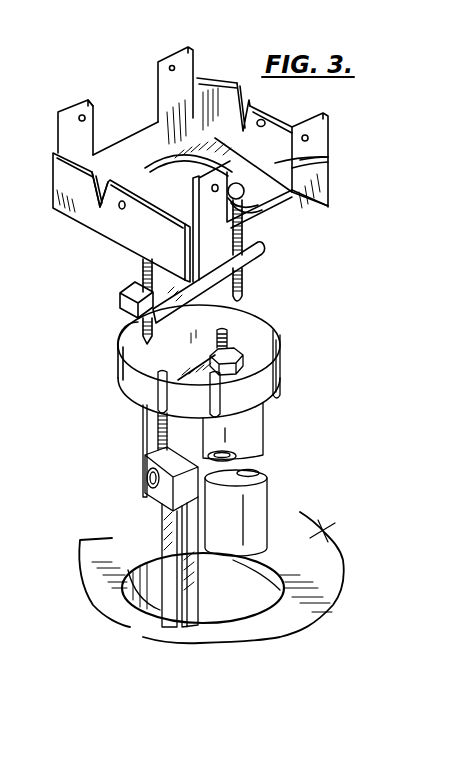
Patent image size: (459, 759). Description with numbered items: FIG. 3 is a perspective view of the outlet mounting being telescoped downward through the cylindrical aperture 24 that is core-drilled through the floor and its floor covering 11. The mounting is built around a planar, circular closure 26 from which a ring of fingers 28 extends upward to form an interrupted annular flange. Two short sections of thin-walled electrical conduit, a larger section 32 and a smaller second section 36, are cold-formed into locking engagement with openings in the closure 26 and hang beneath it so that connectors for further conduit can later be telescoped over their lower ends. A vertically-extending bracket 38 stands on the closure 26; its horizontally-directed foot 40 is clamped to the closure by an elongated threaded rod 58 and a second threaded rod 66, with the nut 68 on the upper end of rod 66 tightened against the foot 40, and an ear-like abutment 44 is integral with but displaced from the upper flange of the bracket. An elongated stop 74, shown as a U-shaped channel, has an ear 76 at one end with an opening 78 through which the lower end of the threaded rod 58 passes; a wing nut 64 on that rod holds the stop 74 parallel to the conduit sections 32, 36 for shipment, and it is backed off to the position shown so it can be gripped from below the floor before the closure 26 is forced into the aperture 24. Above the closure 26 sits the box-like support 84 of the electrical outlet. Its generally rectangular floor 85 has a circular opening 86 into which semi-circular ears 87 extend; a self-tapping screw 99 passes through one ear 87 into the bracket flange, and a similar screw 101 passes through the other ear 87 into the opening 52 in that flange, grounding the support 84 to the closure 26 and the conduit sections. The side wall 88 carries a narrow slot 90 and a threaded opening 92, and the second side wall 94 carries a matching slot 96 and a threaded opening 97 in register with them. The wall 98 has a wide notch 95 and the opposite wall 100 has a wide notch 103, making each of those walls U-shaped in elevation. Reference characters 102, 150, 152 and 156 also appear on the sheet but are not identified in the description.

The floor covering 11 is at (211, 572).
The cylindrical aperture 24 is at (236, 612).
The closure 26 is at (277, 331).
The fingers 28 is at (281, 370).
The section of thin-walled electrical conduit 32 is at (256, 492).
The second section of thin-walled electrical conduit 36 is at (142, 414).
The vertically-extending bracket 38 is at (166, 347).
The foot 40 is at (265, 403).
The ear-like abutment 44 is at (118, 296).
The opening 52 is at (265, 252).
The elongated threaded rod 58 is at (152, 417).
The wing nut 64 is at (146, 482).
The threaded rod 66 is at (245, 340).
The nut 68 is at (282, 353).
The elongated stop 74 is at (161, 528).
The ear 76 is at (144, 458).
The opening 78 is at (155, 447).
The support 84 is at (189, 195).
The floor 85 is at (230, 95).
The circular opening 86 is at (152, 177).
The semi-circular ears 87 is at (243, 203).
The side wall 88 is at (57, 172).
The narrow slot 90 is at (88, 197).
The threaded opening 92 is at (119, 213).
The second side wall 94 is at (305, 168).
The wide notch 95 is at (330, 155).
The slot 96 is at (263, 121).
The threaded opening 97 is at (290, 118).
The wall 98 is at (301, 212).
The self-tapping screw 99 is at (142, 264).
The opposite wall 100 is at (72, 103).
The screw 101 is at (244, 283).
The tab 102 is at (5, 52).
The wide notch 103 is at (93, 112).
The member 150 is at (11, 313).
The member 152 is at (14, 205).
The member 156 is at (12, 281).